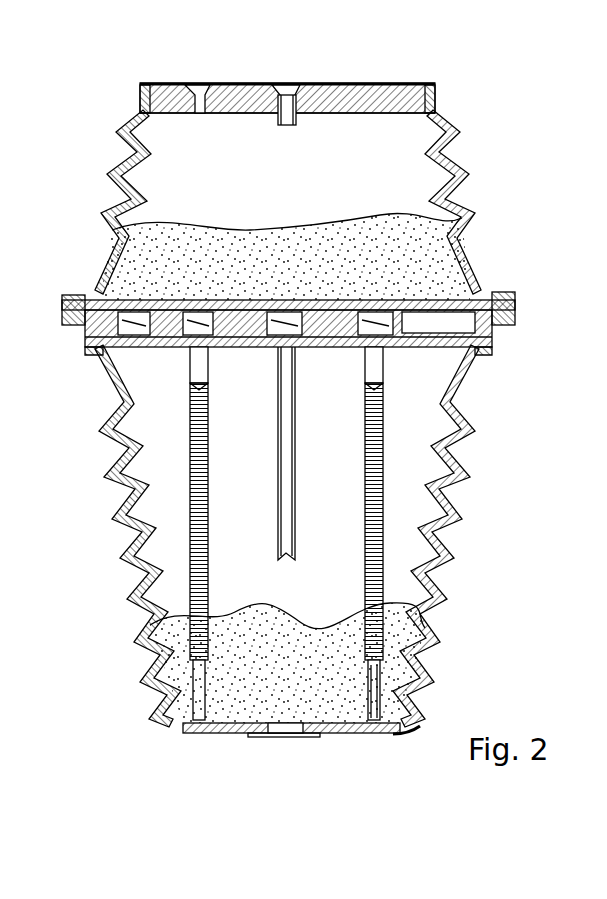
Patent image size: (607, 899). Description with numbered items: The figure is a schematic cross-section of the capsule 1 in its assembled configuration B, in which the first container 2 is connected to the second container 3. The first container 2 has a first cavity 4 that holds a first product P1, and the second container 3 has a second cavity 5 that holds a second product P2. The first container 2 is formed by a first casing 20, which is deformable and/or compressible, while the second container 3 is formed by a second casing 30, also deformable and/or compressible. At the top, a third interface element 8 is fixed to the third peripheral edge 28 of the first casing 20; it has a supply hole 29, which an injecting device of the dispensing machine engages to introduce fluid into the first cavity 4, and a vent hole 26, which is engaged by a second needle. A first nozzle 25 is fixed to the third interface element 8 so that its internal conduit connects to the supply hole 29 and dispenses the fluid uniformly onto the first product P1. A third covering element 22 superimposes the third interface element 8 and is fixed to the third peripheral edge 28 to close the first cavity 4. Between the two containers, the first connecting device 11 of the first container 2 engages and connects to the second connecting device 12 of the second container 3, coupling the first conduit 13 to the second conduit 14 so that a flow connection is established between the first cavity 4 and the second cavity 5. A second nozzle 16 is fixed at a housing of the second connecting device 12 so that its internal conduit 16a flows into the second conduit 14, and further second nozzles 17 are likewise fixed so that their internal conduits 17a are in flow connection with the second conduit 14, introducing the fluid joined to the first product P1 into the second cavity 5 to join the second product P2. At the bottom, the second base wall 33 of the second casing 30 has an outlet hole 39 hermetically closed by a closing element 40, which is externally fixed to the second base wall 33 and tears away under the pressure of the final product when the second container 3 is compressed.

The capsule 1 is at (526, 133).
The first container 2 is at (96, 120).
The second container 3 is at (470, 498).
The first cavity 4 is at (198, 190).
The second cavity 5 is at (247, 463).
The third interface element 8 is at (375, 83).
The first connecting device 11 is at (190, 310).
The first conduit 13 is at (197, 300).
The second connecting device 12 is at (262, 345).
The second conduit 14 is at (300, 345).
The second nozzle 16 is at (293, 555).
The internal conduit 16a is at (280, 453).
The further second nozzle 17 is at (383, 632).
The internal conduit 17a is at (383, 697).
The first casing 20 is at (490, 210).
The third covering element 22 is at (318, 83).
The first nozzle 25 is at (298, 125).
The vent hole 26 is at (203, 83).
The third peripheral edge 28 is at (457, 88).
The supply hole 29 is at (290, 83).
The second casing 30 is at (110, 495).
The second base wall 33 is at (207, 733).
The outlet hole 39 is at (300, 730).
The closing element 40 is at (397, 735).
The first product P1 is at (262, 240).
The second product P2 is at (240, 632).
The assembled configuration B is at (98, 664).